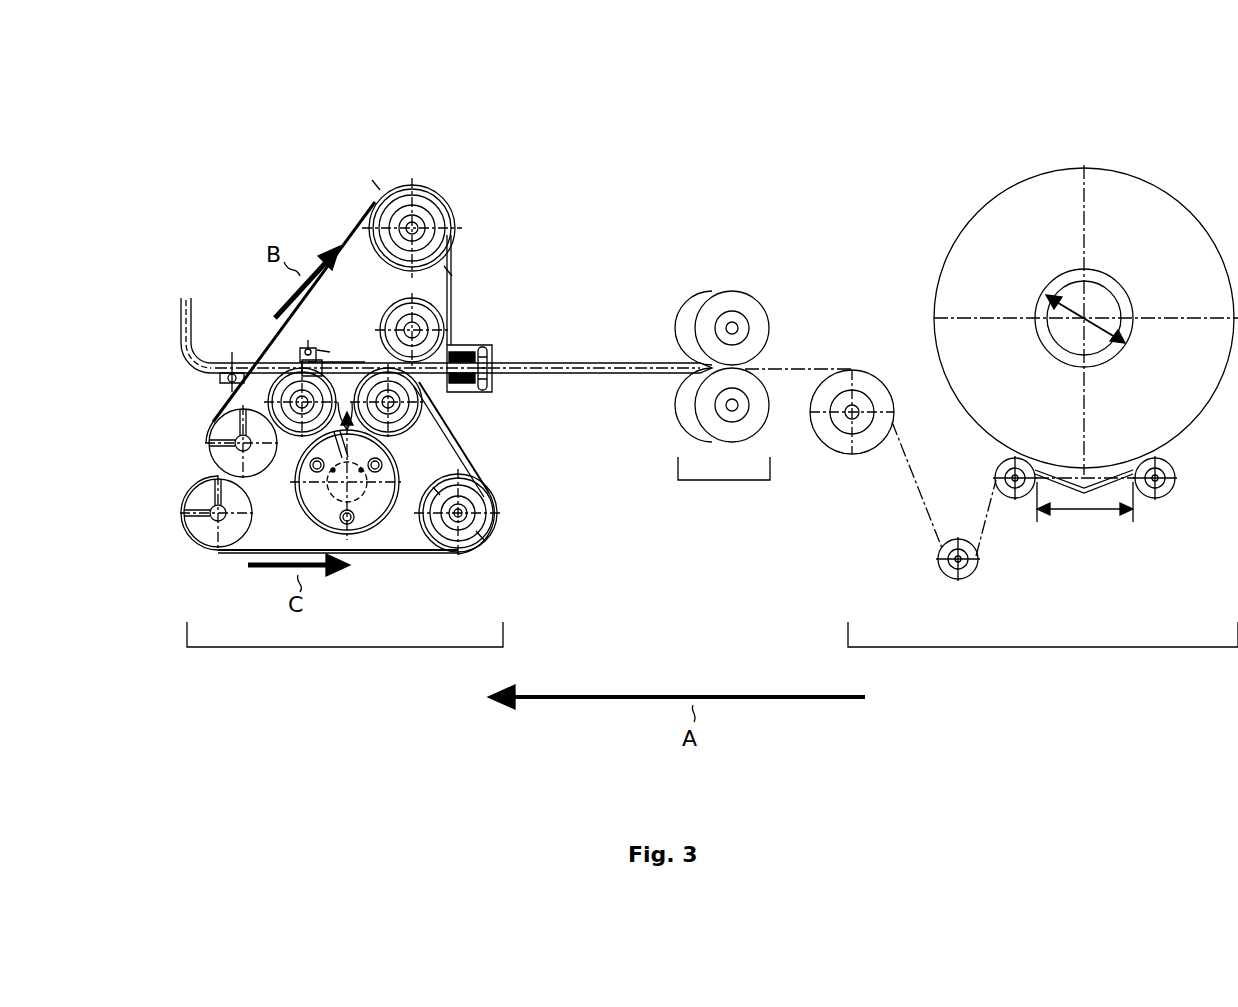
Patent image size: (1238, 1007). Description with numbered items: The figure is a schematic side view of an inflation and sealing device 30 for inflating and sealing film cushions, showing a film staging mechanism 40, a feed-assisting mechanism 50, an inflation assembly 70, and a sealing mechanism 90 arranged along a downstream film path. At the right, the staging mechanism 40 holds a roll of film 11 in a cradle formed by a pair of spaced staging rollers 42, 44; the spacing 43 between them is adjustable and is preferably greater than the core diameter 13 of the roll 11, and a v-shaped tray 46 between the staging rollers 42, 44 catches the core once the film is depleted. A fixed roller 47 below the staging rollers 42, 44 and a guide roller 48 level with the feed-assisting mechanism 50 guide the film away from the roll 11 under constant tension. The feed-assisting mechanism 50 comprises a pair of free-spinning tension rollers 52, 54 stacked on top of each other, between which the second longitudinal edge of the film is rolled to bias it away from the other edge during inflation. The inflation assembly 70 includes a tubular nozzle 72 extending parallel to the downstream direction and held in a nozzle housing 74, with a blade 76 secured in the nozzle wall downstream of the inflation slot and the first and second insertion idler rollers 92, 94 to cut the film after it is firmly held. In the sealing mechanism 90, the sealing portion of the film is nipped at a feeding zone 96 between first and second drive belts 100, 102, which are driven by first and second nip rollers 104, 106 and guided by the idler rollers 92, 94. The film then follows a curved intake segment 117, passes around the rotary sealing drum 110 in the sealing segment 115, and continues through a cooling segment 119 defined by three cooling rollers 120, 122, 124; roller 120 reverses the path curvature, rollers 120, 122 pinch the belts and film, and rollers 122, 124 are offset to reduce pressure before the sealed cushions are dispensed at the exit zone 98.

The inflation and sealing device 30 is at (818, 178).
The roll of film 11 is at (1190, 212).
The core diameter 13 is at (1067, 310).
The film staging mechanism 40 is at (1057, 648).
The staging roller 42 is at (1005, 500).
The spacing 43 is at (1082, 515).
The staging roller 44 is at (1168, 496).
The tray 46 is at (1103, 470).
The fixed roller 47 is at (963, 540).
The guide roller 48 is at (865, 455).
The feed-assisting mechanism 50 is at (724, 481).
The tension roller 52 is at (750, 310).
The tension roller 54 is at (765, 405).
The inflation assembly 70 is at (576, 393).
The nozzle 72 is at (630, 365).
The nozzle housing 74 is at (312, 348).
The blade 76 is at (352, 360).
The sealing mechanism 90 is at (322, 648).
The first insertion idler roller 92 is at (432, 325).
The second insertion idler roller 94 is at (450, 437).
The feeding zone 96 is at (433, 385).
The exit zone 98 is at (195, 467).
The first drive belt 100 is at (352, 236).
The second drive belt 102 is at (238, 548).
The first nip roller 104 is at (442, 205).
The second nip roller 106 is at (500, 522).
The sealing drum 110 is at (313, 505).
The sealing segment 115 is at (355, 537).
The intake segment 117 is at (300, 498).
The cooling segment 119 is at (260, 392).
The cooling roller 120 is at (268, 402).
The cooling roller 122 is at (222, 428).
The cooling roller 124 is at (205, 538).